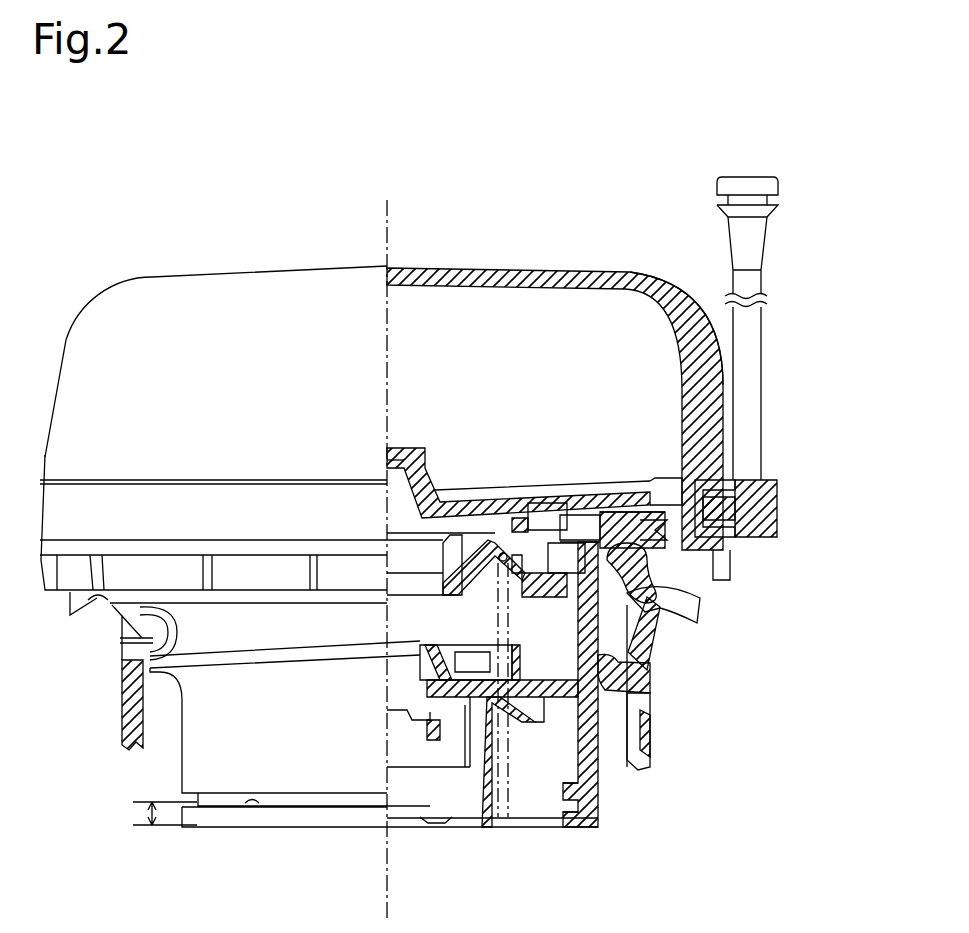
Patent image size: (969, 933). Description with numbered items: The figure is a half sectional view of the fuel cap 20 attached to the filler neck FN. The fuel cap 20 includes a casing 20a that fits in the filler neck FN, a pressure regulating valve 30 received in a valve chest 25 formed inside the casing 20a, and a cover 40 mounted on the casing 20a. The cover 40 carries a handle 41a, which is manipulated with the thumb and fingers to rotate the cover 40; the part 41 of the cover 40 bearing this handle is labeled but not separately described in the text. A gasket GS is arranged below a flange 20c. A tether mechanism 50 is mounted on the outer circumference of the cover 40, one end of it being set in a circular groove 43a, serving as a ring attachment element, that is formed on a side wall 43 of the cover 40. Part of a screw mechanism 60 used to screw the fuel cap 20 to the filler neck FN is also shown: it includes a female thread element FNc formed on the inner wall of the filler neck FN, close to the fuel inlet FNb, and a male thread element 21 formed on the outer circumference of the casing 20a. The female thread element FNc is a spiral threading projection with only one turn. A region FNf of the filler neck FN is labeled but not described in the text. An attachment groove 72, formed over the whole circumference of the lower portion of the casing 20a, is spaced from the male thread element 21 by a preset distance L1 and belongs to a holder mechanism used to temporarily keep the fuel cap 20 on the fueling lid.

The fuel cap 20 is at (671, 141).
The casing 20a is at (593, 778).
The flange 20c is at (627, 517).
The male thread element 21 is at (647, 750).
The valve chest 25 is at (405, 806).
The pressure regulating valve 30 is at (492, 553).
The cover 40 is at (607, 270).
The cover rim 41 is at (592, 490).
The handle 41a is at (640, 278).
The side wall 43 is at (722, 470).
The circular groove 43a is at (705, 515).
The tether mechanism 50 is at (794, 525).
The screw mechanism 60 is at (740, 718).
The filler neck FN is at (615, 685).
The fuel inlet FNb is at (634, 642).
The female thread element FNc is at (643, 700).
The fin tip FNf is at (640, 608).
The gasket GS is at (637, 582).
The attachment groove 72 is at (252, 803).
The preset distance L1 is at (146, 818).